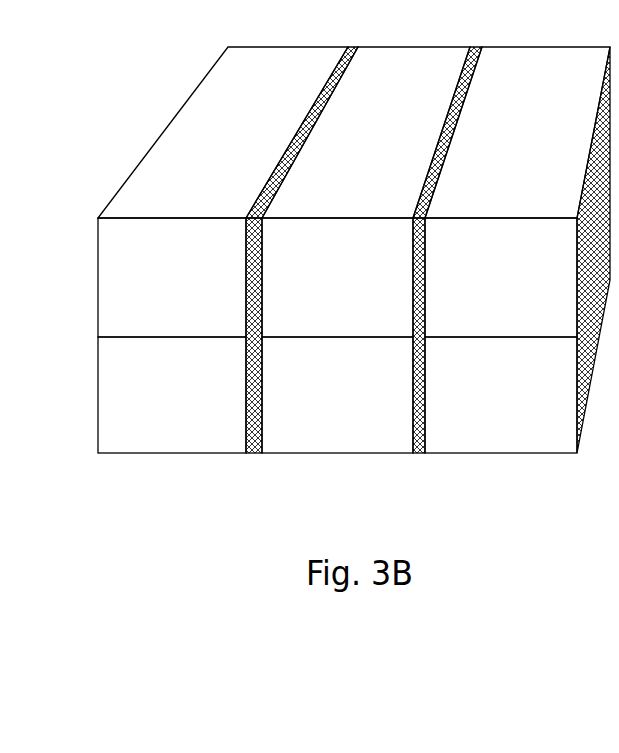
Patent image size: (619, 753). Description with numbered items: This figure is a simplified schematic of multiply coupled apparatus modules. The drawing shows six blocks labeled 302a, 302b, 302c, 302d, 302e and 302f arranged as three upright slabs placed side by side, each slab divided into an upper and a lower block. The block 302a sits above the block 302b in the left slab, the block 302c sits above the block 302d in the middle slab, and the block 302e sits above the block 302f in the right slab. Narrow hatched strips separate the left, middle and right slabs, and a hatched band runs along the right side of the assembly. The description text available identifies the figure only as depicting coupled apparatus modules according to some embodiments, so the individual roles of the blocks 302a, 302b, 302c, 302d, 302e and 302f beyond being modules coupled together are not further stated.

The battery cell 302a is at (172, 277).
The battery cell 302b is at (172, 395).
The battery cell 302c is at (337, 277).
The battery cell 302d is at (337, 395).
The battery cell 302e is at (501, 277).
The battery cell 302f is at (501, 395).